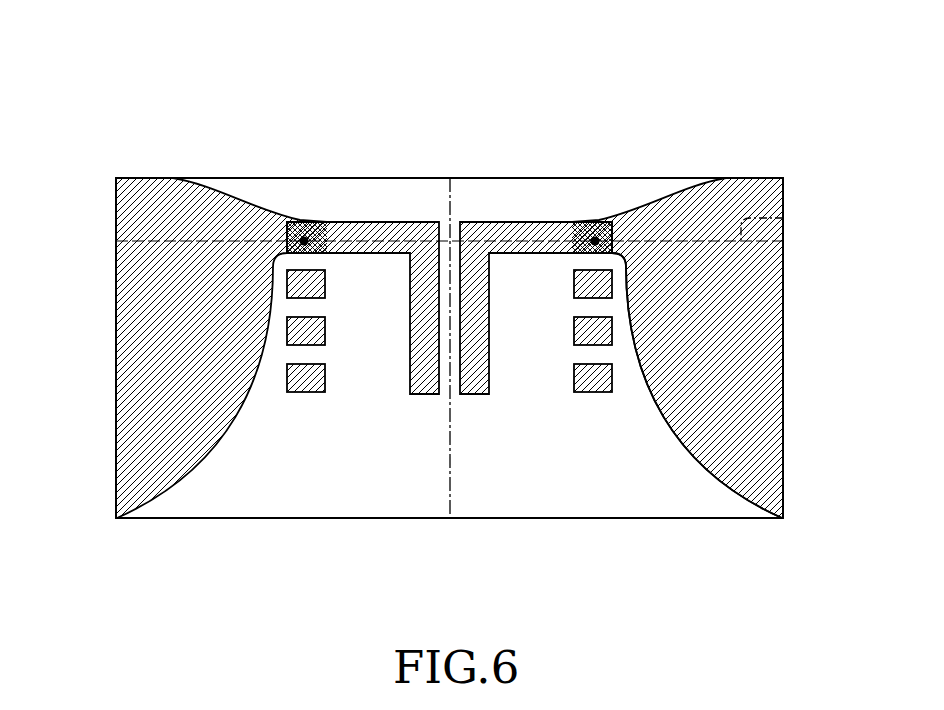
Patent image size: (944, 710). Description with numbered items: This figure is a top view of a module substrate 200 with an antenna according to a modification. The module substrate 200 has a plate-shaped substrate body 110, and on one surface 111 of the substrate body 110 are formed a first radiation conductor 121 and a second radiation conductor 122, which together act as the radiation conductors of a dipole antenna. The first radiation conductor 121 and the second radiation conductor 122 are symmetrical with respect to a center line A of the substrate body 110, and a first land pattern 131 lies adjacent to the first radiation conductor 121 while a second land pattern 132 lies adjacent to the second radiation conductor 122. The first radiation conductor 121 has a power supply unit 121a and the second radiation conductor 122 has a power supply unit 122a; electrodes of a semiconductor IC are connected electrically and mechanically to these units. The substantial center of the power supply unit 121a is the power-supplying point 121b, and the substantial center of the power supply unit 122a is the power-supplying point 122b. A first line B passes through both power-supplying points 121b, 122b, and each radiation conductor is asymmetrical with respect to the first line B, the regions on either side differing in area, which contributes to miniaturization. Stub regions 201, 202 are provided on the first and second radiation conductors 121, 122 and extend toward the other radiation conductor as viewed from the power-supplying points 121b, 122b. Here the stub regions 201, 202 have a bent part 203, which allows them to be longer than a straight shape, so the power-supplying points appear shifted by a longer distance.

The module substrate with an antenna 200 is at (790, 43).
The substrate body 110 is at (512, 177).
The one surface of the substrate body 111 is at (298, 505).
The first radiation conductor 121 is at (770, 398).
The power supply unit of the first radiation conductor 121a is at (602, 223).
The power-supplying point of the first radiation conductor 121b is at (567, 258).
The second radiation conductor 122 is at (130, 402).
The power supply unit of the second radiation conductor 122a is at (290, 210).
The power-supplying point of the second radiation conductor 122b is at (308, 217).
The first land pattern 131 is at (572, 287).
The second land pattern 132 is at (327, 287).
The stub region 201 is at (538, 222).
The stub region 202 is at (393, 255).
The bent part 203 is at (482, 203).
The center line A is at (451, 411).
The first line B is at (783, 218).